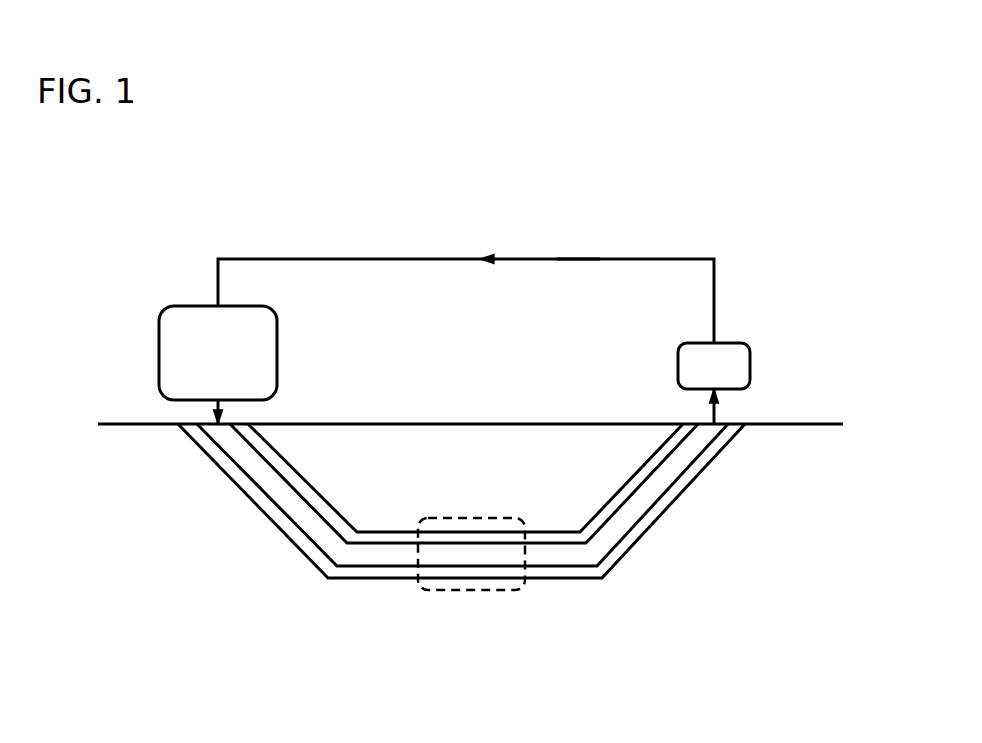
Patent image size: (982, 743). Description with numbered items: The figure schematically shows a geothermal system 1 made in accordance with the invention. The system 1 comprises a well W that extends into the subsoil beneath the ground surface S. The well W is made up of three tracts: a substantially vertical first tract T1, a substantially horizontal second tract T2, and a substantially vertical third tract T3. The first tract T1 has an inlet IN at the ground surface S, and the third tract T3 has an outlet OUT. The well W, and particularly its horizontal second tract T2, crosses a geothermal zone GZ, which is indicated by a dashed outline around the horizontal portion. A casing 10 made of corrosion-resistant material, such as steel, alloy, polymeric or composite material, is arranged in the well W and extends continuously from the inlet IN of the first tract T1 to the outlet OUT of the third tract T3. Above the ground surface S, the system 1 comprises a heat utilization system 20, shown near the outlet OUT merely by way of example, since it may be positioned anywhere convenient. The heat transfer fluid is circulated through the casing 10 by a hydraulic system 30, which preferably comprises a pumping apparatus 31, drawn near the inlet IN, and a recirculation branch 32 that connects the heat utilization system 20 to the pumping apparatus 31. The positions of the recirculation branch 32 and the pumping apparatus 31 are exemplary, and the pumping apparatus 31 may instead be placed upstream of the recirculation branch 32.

The geothermal system 1 is at (153, 532).
The casing 10 is at (673, 472).
The heat utilization system 20 is at (714, 383).
The hydraulic system 30 is at (382, 235).
The pumping apparatus 31 is at (218, 365).
The recirculation branch 32 is at (557, 259).
The ground surface S is at (125, 424).
The well W is at (615, 570).
The geothermal zone GZ is at (525, 592).
The inlet IN is at (205, 424).
The outlet OUT is at (723, 424).
The first tract T1 is at (273, 516).
The second tract T2 is at (357, 570).
The third tract T3 is at (642, 530).